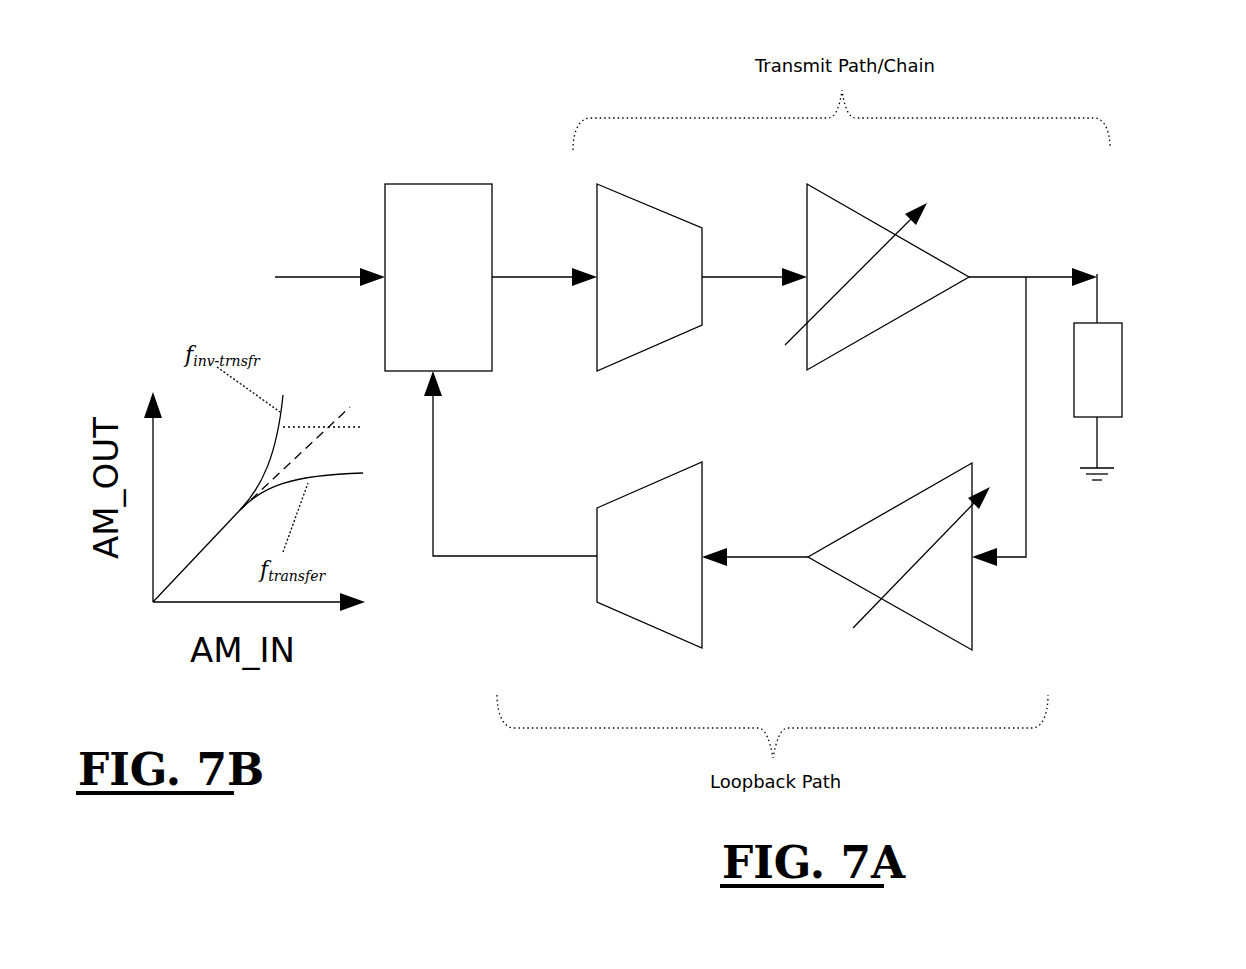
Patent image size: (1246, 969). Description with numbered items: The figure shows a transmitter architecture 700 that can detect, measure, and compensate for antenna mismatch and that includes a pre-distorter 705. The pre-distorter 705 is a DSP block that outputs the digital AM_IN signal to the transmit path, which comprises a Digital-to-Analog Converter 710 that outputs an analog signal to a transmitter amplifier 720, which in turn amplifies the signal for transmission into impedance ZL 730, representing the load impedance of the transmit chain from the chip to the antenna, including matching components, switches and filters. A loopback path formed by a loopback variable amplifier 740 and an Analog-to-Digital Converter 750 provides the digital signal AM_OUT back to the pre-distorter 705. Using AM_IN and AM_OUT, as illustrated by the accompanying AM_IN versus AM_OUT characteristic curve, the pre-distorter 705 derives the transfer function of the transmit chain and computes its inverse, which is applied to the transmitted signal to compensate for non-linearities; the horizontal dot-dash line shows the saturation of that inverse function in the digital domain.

The transmitter architecture 700 is at (385, 111).
The pre-distorter 705 is at (398, 213).
The Digital-to-Analog Converter 710 is at (660, 233).
The transmitter amplifier 720 is at (910, 275).
The impedance ZL 730 is at (1102, 391).
The loopback variable amplifier 740 is at (957, 567).
The Analog-to-Digital Converter 750 is at (648, 582).